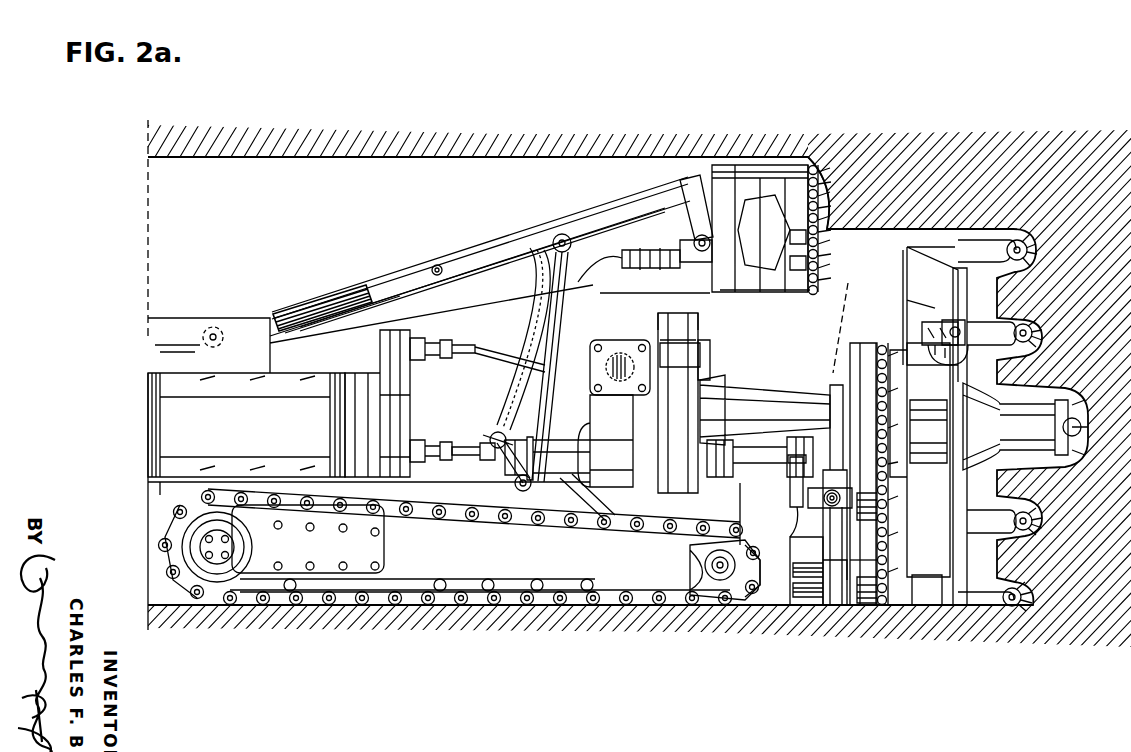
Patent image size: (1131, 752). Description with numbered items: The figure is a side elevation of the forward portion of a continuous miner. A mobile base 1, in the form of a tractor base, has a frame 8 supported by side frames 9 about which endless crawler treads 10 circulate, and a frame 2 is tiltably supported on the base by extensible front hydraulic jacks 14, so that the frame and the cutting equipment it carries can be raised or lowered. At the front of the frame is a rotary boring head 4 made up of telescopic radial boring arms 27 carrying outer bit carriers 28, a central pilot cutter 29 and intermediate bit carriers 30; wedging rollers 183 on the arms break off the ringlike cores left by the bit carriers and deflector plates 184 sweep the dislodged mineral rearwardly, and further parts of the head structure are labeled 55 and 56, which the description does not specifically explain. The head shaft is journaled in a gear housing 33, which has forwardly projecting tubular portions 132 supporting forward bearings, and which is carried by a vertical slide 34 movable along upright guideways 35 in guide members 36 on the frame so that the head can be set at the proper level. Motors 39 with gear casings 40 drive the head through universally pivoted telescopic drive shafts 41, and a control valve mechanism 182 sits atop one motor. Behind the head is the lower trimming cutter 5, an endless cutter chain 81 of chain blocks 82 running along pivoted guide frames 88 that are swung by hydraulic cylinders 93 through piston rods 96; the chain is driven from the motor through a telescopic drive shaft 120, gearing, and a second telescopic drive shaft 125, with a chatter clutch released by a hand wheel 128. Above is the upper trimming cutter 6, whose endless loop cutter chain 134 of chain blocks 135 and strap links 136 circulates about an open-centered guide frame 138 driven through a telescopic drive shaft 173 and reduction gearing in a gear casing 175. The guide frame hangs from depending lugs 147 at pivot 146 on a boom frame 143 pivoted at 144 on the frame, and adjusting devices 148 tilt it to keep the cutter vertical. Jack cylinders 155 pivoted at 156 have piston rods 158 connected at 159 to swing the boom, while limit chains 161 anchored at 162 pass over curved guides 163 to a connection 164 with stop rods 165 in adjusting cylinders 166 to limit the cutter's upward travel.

The mobile base 1 is at (605, 570).
The tiltable frame 2 is at (490, 348).
The boring head 4 is at (978, 550).
The lower trimming cutter 5 is at (900, 513).
The upper trimming cutter 6 is at (829, 156).
The frame 8 is at (185, 497).
The side frames 9 is at (480, 558).
The endless crawler treads 10 is at (512, 598).
The front hydraulic jacks 14 is at (598, 498).
The telescopic radial boring arms 27 is at (943, 258).
The outer cutter supports or bit carriers 28 is at (1010, 258).
The central pilot cutter 29 is at (1065, 410).
The intermediate cutter supports or bit carriers 30 is at (1034, 330).
The gear housing 33 is at (675, 470).
The vertical slide 34 is at (705, 350).
The upright guideways 35 is at (690, 330).
The guide members 36 is at (660, 333).
The motors 39 is at (200, 418).
The gear casings 40 is at (398, 388).
The universally pivoted telescopic drive shafts 41 is at (445, 340).
The cutter arm 55 is at (950, 265).
The cutter bit holder 56 is at (935, 338).
The cutter chain 81 is at (887, 560).
The chain blocks 82 is at (885, 605).
The side guides or guide frames 88 is at (867, 557).
The hydraulic cylinders 93 is at (790, 480).
The piston rods 96 is at (798, 525).
The universal telescopic drive shaft 120 is at (488, 443).
The universal telescopic drive shaft 125 is at (765, 462).
The hand wheel 128 is at (490, 425).
The forwardly projecting tubular portions 132 is at (773, 400).
The endless loop cutter chain 134 is at (825, 165).
The chain blocks 135 is at (808, 238).
The strap links 136 is at (808, 264).
The guide frame 138 is at (790, 165).
The boom frame 143 is at (480, 255).
The boom frame pivot 144 is at (210, 330).
The bracket pivot 146 is at (685, 248).
The depending lugs 147 is at (698, 238).
The adjusting devices 148 is at (700, 185).
The cylinders 155 is at (560, 400).
The cylinder pivot 156 is at (520, 490).
The piston rods 158 is at (548, 327).
The piston rod pivot 159 is at (572, 243).
The limit chains 161 is at (520, 345).
The chain attachment 162 is at (496, 448).
The curved guides 163 is at (527, 258).
The chain connection 164 is at (482, 269).
The stop rods 165 is at (382, 285).
The adjusting cylinders 166 is at (306, 313).
The universal telescopic drive shaft 173 is at (605, 268).
The gear casing 175 is at (665, 268).
The control valve mechanism 182 is at (160, 345).
The wedging rollers 183 is at (933, 365).
The deflector plates 184 is at (920, 312).